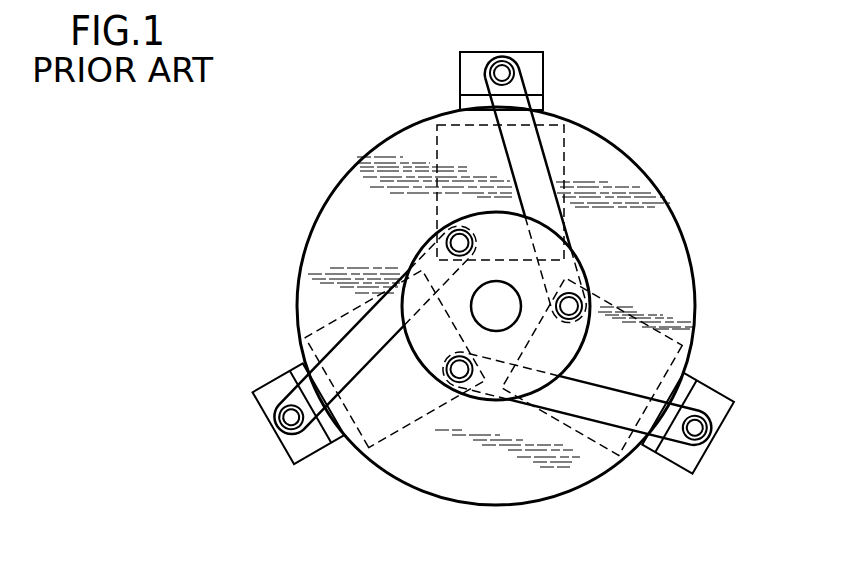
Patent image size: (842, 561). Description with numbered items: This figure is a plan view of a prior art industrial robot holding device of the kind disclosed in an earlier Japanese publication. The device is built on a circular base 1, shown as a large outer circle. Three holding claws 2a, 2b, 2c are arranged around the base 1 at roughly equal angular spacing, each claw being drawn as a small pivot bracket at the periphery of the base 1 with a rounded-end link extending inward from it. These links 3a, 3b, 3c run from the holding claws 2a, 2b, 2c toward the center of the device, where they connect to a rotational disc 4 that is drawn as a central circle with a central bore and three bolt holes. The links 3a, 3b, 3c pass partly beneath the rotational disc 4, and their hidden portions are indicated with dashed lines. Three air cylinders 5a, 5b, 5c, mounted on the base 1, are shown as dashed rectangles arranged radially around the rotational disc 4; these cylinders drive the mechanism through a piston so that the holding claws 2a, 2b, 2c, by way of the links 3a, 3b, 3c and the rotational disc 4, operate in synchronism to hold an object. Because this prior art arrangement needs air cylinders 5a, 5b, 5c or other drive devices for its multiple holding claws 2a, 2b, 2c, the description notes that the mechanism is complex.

The base 1 is at (672, 215).
The holding claw 2a is at (543, 72).
The holding claw 2b is at (698, 455).
The holding claw 2c is at (290, 442).
The link 3a is at (542, 165).
The link 3b is at (607, 412).
The link 3c is at (343, 343).
The rotational disc 4 is at (533, 297).
The air cylinder 5a is at (445, 152).
The air cylinder 5b is at (698, 357).
The air cylinder 5c is at (376, 456).